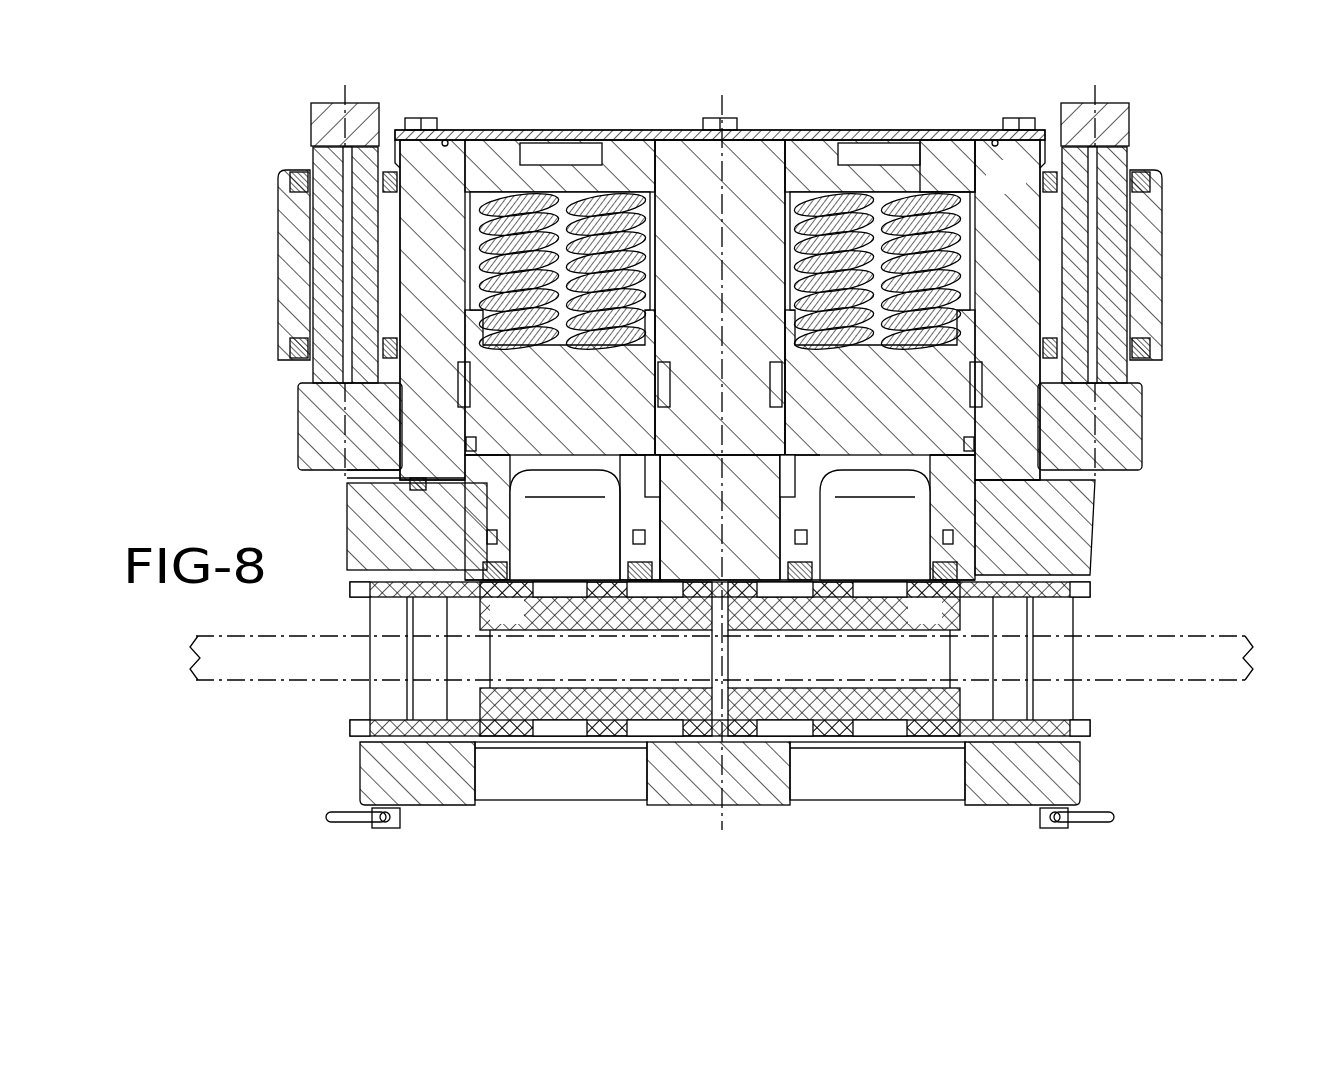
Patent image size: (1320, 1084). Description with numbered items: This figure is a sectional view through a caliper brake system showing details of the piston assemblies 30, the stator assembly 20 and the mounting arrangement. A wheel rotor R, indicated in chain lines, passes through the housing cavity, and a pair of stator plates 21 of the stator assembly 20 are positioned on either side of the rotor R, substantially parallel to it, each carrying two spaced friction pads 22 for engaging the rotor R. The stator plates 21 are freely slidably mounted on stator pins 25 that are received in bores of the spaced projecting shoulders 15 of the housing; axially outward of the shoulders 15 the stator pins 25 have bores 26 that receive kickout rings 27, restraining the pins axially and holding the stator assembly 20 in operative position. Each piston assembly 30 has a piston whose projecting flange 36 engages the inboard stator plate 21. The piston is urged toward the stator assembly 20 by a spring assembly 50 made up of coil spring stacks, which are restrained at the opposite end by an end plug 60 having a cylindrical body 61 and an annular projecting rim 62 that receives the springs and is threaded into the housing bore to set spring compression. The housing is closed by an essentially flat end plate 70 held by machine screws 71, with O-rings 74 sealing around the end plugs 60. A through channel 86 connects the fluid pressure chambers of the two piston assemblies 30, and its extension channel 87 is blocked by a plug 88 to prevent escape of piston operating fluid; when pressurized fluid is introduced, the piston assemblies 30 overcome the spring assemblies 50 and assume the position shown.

The projecting shoulders 15 is at (1082, 548).
The stator assembly 20 is at (380, 600).
The stator plates 21 is at (1045, 596).
The pads 22 is at (493, 623).
The stator pins 25 is at (402, 818).
The bores 26 is at (386, 823).
The kickout rings 27 is at (335, 821).
The piston assemblies 30 is at (992, 340).
The projecting flange 36 is at (940, 540).
The spring assembly 50 is at (952, 268).
The end plug 60 is at (703, 133).
The cylindrical body 61 is at (938, 155).
The annular projecting rim 62 is at (946, 167).
The end plate 70 is at (850, 140).
The machine screws 71 is at (422, 122).
The O-rings 74 is at (760, 142).
The through channel 86 is at (688, 493).
The extension channel 87 is at (448, 492).
The plug 88 is at (408, 486).
The wheel rotor R is at (1215, 682).